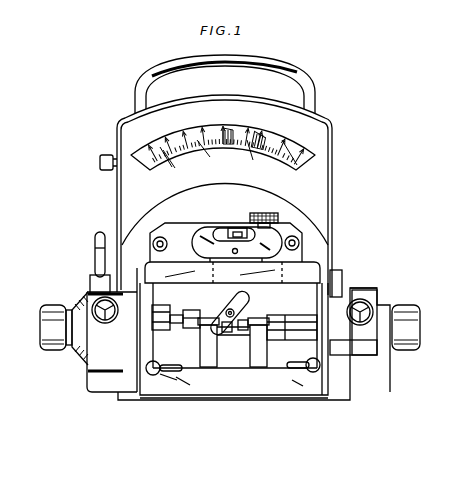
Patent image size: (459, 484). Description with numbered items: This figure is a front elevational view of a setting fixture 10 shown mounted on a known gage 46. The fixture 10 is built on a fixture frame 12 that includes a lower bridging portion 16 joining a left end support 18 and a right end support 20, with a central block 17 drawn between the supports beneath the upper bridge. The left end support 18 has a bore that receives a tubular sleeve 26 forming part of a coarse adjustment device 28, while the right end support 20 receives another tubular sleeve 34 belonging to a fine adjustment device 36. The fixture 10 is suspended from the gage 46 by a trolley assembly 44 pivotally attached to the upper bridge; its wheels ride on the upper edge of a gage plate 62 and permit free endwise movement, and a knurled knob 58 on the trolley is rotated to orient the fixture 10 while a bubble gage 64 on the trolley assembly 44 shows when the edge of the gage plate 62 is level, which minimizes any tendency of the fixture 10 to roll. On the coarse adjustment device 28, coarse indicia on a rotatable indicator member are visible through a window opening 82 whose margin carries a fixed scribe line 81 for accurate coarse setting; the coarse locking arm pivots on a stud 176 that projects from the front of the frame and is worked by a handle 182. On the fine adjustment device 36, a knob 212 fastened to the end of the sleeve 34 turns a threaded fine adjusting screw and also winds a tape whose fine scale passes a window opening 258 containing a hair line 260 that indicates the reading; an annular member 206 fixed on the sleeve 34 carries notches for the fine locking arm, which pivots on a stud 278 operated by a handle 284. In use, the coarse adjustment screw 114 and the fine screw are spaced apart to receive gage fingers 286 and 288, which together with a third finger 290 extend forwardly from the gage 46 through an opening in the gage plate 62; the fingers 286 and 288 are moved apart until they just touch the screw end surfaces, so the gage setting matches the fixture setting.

The setting fixture 10 is at (83, 373).
The fixture frame 12 is at (350, 397).
The lower bridging portion 16 is at (240, 392).
The mounting block 17 is at (312, 272).
The left end support 18 is at (141, 302).
The right end support 20 is at (323, 301).
The tubular sleeve 26 is at (168, 318).
The coarse adjustment device 28 is at (80, 292).
The tubular sleeve 34 is at (290, 314).
The fine adjustment device 36 is at (378, 290).
The trolley assembly 44 is at (216, 226).
The gage 46 is at (338, 149).
The knurled knob 58 is at (262, 213).
The gage plate 62 is at (181, 374).
The bubble gage 64 is at (236, 228).
The fixed scribe line 81 is at (98, 291).
The window opening 82 is at (105, 323).
The coarse adjustment screw 114 is at (190, 370).
The pivot stud 176 is at (150, 377).
The handle 182 is at (172, 378).
The annular member 206 is at (47, 345).
The knob 212 is at (400, 343).
The window opening 258 is at (373, 302).
The hair line 260 is at (361, 325).
The pivot stud 278 is at (313, 373).
The handle 284 is at (290, 372).
The gage finger 286 is at (212, 353).
The gage finger 288 is at (263, 353).
The third finger 290 is at (228, 303).